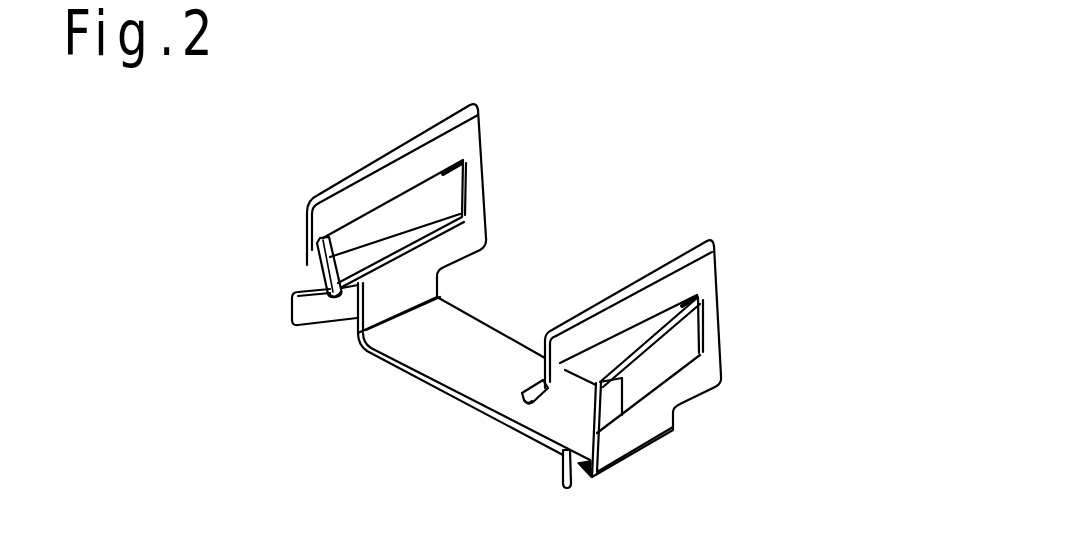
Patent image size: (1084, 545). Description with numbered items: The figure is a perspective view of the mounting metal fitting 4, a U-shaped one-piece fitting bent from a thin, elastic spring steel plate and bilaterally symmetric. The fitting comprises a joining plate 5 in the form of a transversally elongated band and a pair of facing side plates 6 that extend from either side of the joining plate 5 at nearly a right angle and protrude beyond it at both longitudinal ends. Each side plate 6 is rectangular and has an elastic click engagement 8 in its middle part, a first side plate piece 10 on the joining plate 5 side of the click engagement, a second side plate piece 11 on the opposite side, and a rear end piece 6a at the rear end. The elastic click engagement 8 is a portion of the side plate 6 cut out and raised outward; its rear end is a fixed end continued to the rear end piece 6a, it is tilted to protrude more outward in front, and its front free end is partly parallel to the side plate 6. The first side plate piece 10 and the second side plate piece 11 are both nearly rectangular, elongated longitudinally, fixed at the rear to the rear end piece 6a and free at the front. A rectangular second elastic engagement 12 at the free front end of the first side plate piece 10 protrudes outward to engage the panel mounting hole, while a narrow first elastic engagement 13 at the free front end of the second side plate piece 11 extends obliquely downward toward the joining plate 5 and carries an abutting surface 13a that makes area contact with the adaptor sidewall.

The mounting metal fitting 4 is at (633, 161).
The joining plate 5 is at (467, 410).
The side plate 6 is at (296, 185).
The rear end piece 6a is at (488, 182).
The elastic click engagement 8 is at (404, 227).
The first side plate piece 10 is at (446, 263).
The second side plate piece 11 is at (392, 153).
The second elastic engagement 12 is at (330, 330).
The first elastic engagement 13 is at (316, 272).
The abutting surface 13a is at (336, 296).